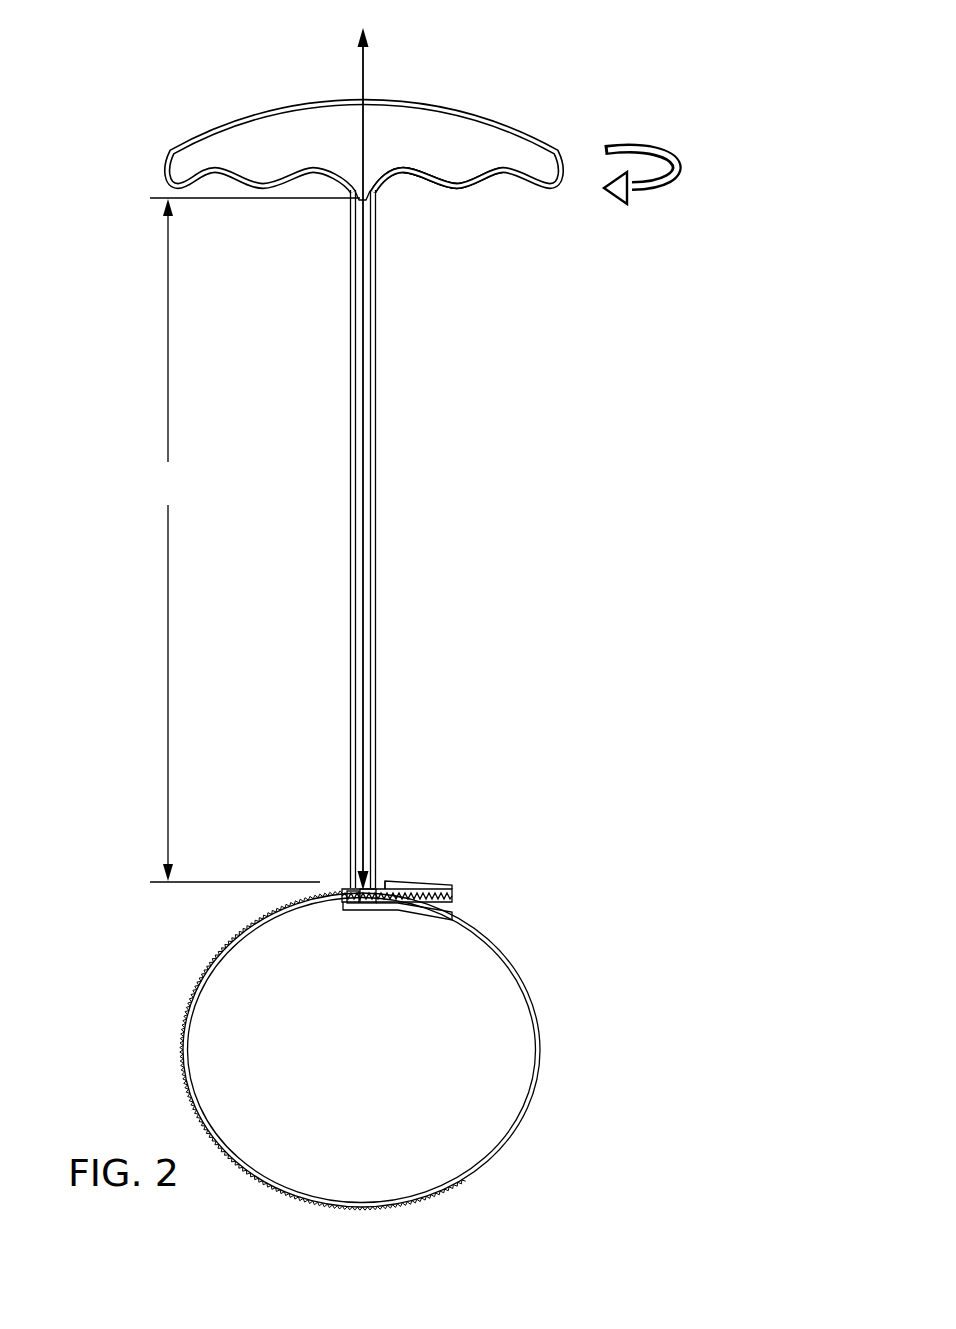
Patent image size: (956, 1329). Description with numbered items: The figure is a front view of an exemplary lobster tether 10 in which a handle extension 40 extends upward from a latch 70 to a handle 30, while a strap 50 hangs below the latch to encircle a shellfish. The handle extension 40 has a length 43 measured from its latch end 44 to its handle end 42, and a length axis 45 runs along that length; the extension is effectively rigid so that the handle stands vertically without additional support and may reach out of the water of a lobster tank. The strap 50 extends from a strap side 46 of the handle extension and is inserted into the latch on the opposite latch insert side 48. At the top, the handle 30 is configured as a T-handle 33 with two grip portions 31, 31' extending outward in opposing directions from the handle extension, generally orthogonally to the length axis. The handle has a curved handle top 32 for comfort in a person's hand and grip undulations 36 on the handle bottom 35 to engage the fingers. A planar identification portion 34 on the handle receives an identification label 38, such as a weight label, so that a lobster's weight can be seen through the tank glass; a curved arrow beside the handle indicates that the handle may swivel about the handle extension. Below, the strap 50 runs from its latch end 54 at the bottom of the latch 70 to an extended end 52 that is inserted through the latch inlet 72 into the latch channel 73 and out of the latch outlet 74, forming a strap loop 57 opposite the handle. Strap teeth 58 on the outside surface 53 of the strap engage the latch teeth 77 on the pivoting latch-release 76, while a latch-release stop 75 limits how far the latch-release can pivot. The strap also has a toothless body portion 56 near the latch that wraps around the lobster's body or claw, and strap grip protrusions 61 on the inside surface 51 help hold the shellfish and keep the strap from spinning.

The lobster tether 10 is at (152, 157).
The handle 30 is at (500, 134).
The grip portion 31 is at (364, 115).
The grip portion 31' is at (380, 112).
The handle top 32 is at (455, 128).
The T-handle 33 is at (297, 128).
The identification portion 34 is at (342, 148).
The handle bottom 35 is at (458, 190).
The grip undulations 36 is at (408, 178).
The identification label 38 is at (385, 150).
The handle extension 40 is at (376, 476).
The handle end 42 is at (352, 200).
The length 43 is at (252, 540).
The latch end 44 is at (350, 886).
The length axis 45 is at (367, 56).
The strap side 46 is at (377, 530).
The latch insert side 48 is at (350, 524).
The strap 50 is at (480, 931).
The inside surface 51 is at (532, 1020).
The extended end 52 is at (462, 889).
The outside surface 53 is at (531, 998).
The latch end 54 is at (365, 906).
The body portion 56 is at (541, 1050).
The strap loop 57 is at (521, 978).
The strap teeth 58 is at (425, 889).
The strap grip protrusions 61 is at (518, 998).
The latch 70 is at (378, 882).
The latch inlet 72 is at (345, 893).
The latch channel 73 is at (342, 906).
The latch outlet 74 is at (382, 906).
The latch-release stop 75 is at (393, 885).
The latch-release 76 is at (442, 888).
The latch teeth 77 is at (397, 906).